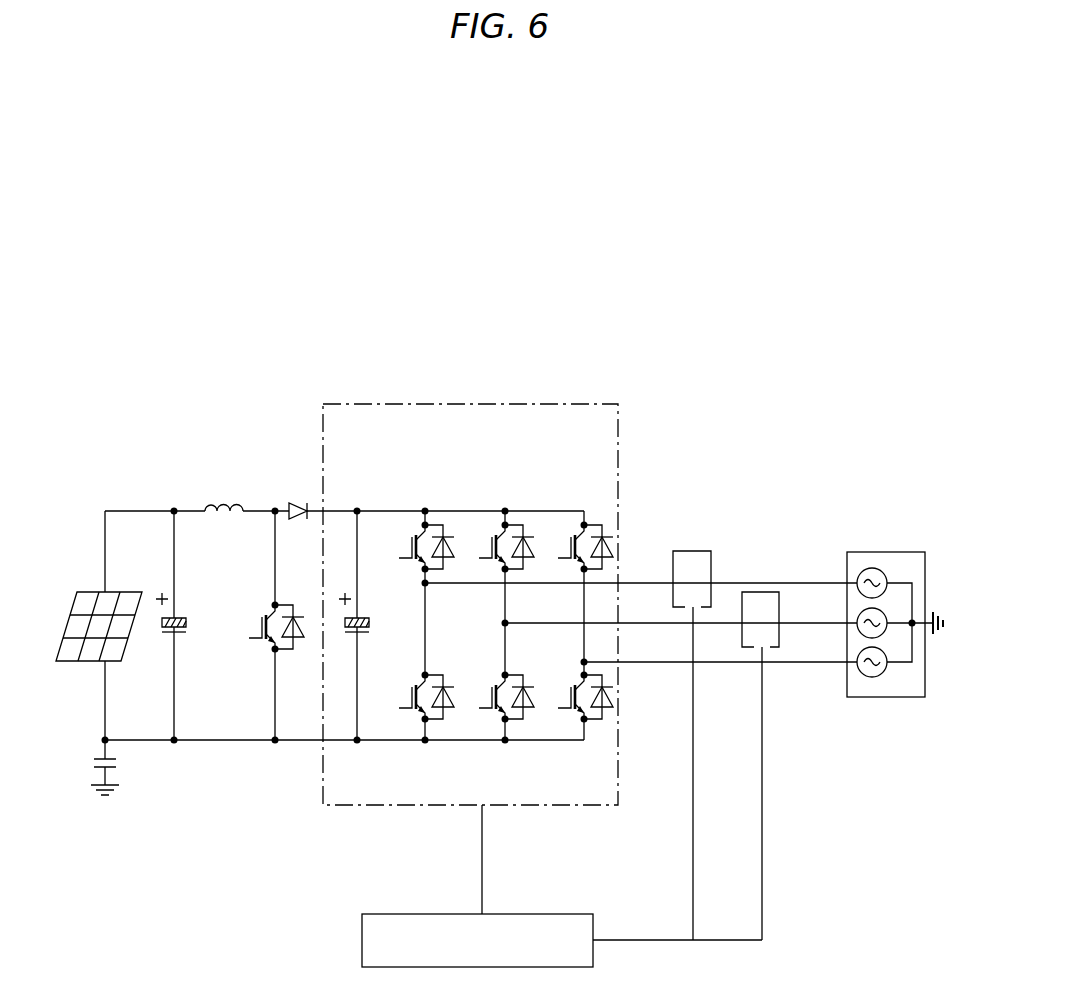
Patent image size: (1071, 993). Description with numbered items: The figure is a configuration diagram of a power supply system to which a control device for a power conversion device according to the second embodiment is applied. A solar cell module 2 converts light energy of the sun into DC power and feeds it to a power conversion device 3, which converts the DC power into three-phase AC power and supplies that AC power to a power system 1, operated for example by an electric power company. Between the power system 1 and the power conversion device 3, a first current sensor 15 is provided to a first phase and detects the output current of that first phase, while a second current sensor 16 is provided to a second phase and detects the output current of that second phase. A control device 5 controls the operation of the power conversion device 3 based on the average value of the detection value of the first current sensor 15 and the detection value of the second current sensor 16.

The power system 1 is at (888, 552).
The solar cell module 2 is at (91, 592).
The power conversion device 3 is at (477, 404).
The control device 5 is at (362, 938).
The first current sensor 15 is at (693, 551).
The second current sensor 16 is at (762, 592).